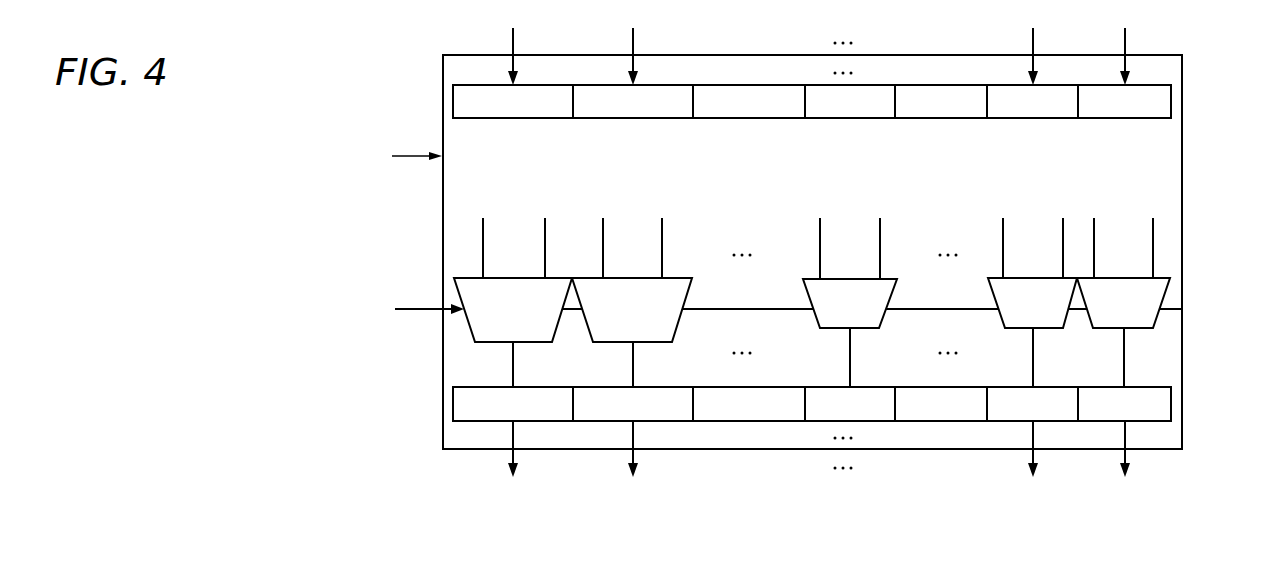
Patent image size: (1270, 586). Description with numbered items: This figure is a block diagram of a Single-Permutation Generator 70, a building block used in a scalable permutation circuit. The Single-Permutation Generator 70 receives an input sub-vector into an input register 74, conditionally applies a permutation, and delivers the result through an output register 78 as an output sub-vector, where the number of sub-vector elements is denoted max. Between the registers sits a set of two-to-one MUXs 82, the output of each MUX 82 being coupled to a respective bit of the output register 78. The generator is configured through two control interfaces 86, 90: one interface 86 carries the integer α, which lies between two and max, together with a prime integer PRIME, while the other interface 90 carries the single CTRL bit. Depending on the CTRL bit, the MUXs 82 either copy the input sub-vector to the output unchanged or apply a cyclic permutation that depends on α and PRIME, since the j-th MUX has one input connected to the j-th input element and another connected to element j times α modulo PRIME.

The Single-Permutation Generator 70 is at (1183, 163).
The input register 74 is at (1199, 102).
The output register 78 is at (1199, 404).
The two-to-one MUX 82 is at (819, 326).
The control interface 86 is at (417, 157).
The control interface 90 is at (417, 310).